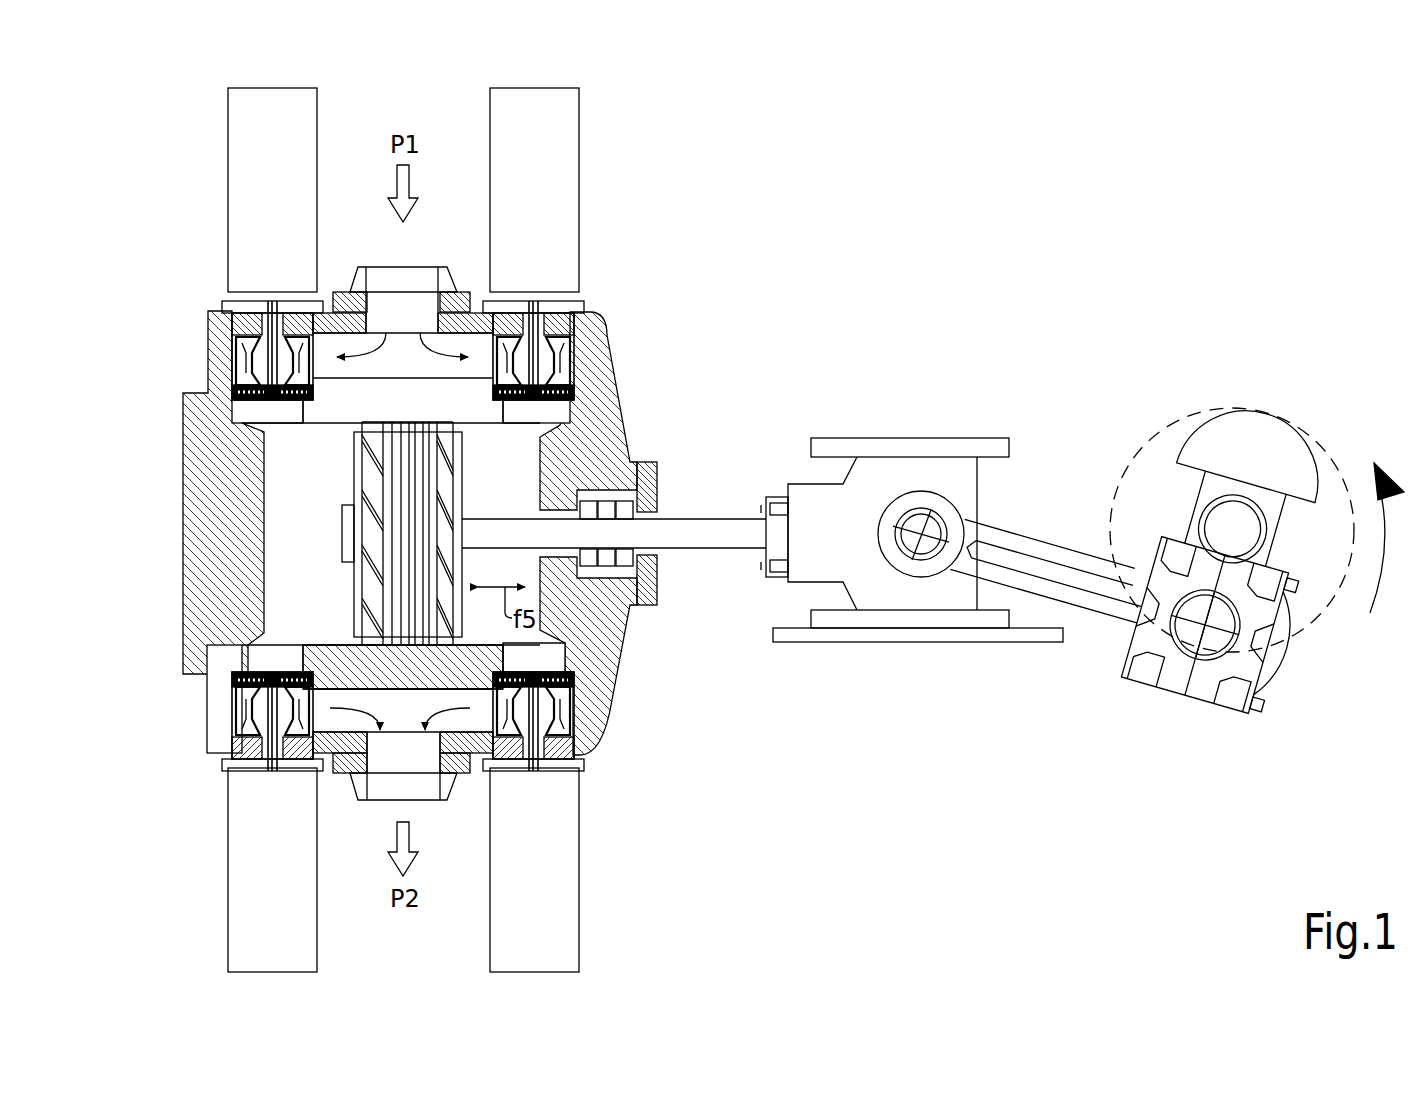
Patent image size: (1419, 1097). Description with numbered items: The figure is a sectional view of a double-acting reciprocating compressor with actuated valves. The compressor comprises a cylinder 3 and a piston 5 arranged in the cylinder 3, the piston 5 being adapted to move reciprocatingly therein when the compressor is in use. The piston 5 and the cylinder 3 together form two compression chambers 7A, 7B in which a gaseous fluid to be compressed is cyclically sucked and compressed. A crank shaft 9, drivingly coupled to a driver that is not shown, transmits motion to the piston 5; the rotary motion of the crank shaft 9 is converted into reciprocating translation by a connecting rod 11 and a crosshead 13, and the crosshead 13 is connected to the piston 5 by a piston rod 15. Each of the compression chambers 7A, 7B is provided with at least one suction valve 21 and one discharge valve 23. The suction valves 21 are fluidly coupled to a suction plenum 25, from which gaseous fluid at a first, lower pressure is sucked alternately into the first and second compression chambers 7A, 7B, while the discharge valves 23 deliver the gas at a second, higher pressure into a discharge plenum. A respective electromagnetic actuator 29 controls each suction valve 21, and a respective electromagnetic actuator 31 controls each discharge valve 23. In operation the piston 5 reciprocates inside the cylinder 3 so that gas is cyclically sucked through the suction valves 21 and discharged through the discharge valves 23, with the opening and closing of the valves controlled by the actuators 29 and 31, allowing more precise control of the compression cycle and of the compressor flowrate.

The cylinder 3 is at (612, 328).
The piston 5 is at (362, 478).
The first compression chamber 7A is at (323, 547).
The second compression chamber 7B is at (521, 483).
The crank shaft 9 is at (1253, 430).
The connecting rod 11 is at (1048, 560).
The crosshead 13 is at (968, 480).
The piston rod 15 is at (713, 535).
The suction valve 21 is at (220, 298).
The discharge valve 23 is at (214, 770).
The suction plenum 25 is at (385, 328).
The electromagnetic actuator 29 is at (270, 120).
The electro-magnetic actuator 31 is at (247, 953).